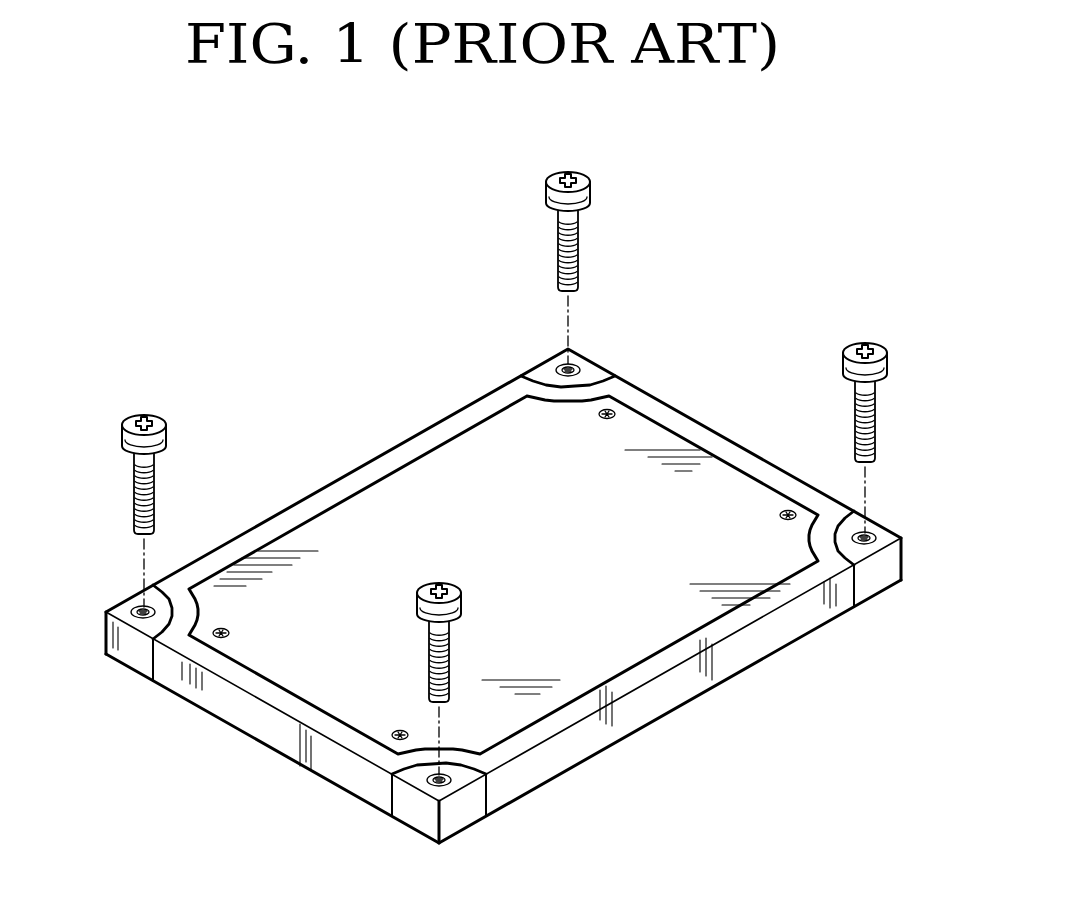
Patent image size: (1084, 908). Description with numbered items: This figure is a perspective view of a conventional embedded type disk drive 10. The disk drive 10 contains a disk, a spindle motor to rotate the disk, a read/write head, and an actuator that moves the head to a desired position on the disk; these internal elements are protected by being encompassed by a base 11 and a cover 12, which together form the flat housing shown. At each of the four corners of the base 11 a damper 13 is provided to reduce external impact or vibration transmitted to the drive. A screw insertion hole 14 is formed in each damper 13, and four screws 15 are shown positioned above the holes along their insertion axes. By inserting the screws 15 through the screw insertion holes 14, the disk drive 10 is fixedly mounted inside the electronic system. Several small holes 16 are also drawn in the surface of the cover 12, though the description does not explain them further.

The disk drive 10 is at (262, 312).
The base 11 is at (708, 682).
The cover 12 is at (663, 480).
The damper 13 is at (592, 373).
The screw insertion hole 14 is at (558, 368).
The screw 15 is at (580, 256).
The small hole 16 is at (613, 409).